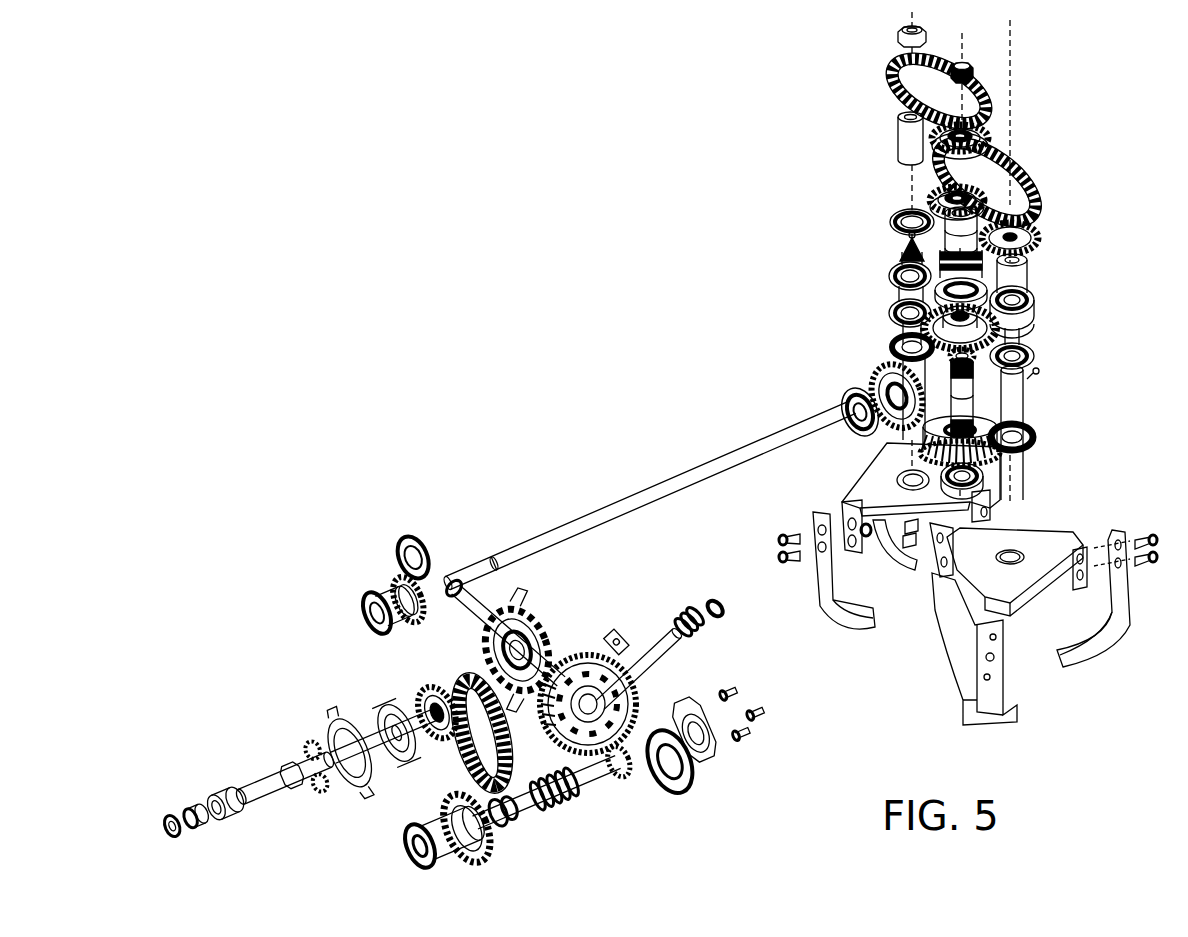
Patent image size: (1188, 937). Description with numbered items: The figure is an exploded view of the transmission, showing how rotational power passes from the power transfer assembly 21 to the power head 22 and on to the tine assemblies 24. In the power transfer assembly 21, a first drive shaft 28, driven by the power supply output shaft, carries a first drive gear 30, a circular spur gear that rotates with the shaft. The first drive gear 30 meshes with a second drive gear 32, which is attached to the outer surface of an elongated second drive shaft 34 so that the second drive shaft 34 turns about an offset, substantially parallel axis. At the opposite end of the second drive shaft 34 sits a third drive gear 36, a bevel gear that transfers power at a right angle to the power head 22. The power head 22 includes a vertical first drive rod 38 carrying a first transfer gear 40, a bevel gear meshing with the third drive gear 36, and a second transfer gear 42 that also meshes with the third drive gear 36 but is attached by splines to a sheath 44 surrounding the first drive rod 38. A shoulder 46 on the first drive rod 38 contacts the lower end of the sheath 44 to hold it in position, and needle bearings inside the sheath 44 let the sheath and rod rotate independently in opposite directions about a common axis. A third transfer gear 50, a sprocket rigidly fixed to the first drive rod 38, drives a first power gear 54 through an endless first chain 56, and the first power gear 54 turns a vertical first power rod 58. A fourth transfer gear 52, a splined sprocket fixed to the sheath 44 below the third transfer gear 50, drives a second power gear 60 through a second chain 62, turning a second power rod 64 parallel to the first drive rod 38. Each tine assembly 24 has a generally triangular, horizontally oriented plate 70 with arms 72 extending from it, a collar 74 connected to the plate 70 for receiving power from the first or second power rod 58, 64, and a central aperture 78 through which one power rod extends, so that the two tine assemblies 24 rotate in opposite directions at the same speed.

The power transfer assembly 21 is at (331, 653).
The power head 22 is at (1038, 103).
The tine assembly 24 is at (880, 674).
The first drive shaft 28 is at (268, 787).
The first drive gear 30 is at (420, 700).
The second drive gear 32 is at (385, 590).
The second drive shaft 34 is at (692, 480).
The third drive gear 36 is at (878, 380).
The first drive rod 38 is at (966, 398).
The first transfer gear 40 is at (1020, 463).
The second transfer gear 42 is at (893, 339).
The sheath 44 is at (950, 241).
The shoulder 46 is at (1020, 379).
The third transfer gear 50 is at (990, 141).
The fourth transfer gear 52 is at (935, 194).
The first power gear 54 is at (977, 94).
The first chain 56 is at (883, 104).
The first power rod 58 is at (905, 296).
The second power gear 60 is at (1033, 238).
The second chain 62 is at (1031, 186).
The second power rod 64 is at (1014, 399).
The plate 70 is at (1050, 542).
The arm 72 is at (933, 574).
The collar 74 is at (970, 693).
The aperture 78 is at (1015, 564).